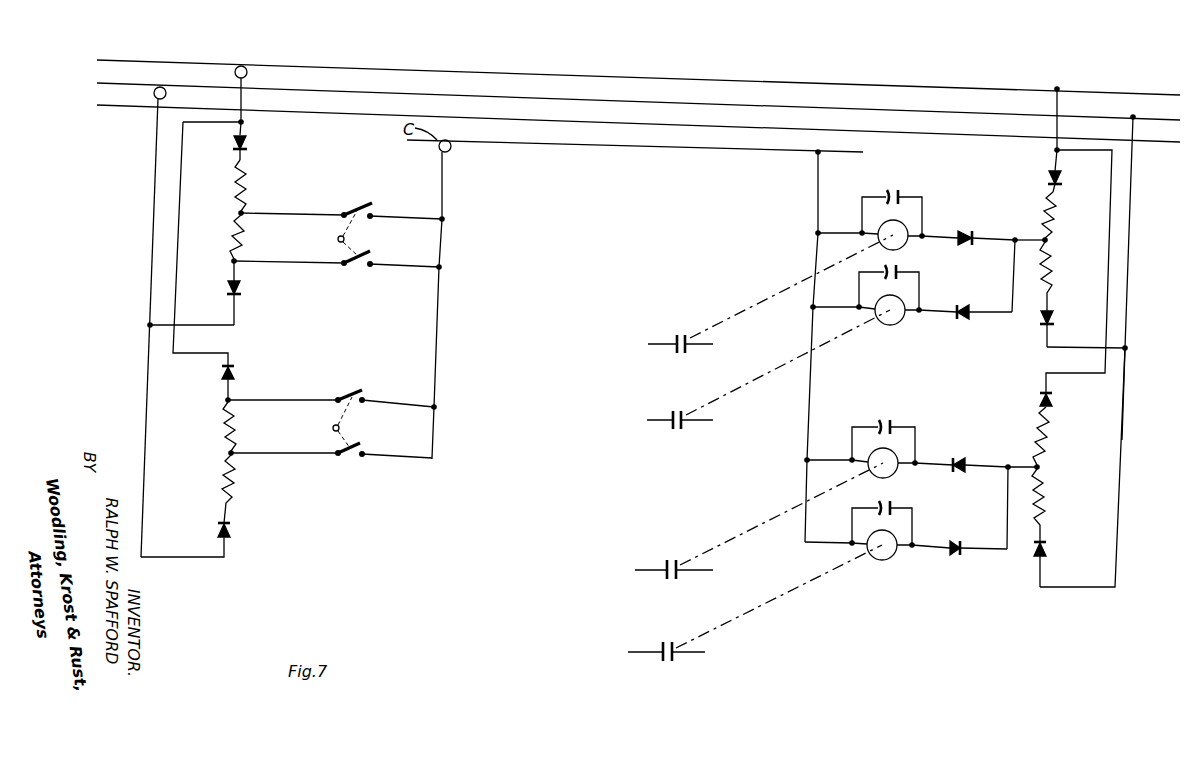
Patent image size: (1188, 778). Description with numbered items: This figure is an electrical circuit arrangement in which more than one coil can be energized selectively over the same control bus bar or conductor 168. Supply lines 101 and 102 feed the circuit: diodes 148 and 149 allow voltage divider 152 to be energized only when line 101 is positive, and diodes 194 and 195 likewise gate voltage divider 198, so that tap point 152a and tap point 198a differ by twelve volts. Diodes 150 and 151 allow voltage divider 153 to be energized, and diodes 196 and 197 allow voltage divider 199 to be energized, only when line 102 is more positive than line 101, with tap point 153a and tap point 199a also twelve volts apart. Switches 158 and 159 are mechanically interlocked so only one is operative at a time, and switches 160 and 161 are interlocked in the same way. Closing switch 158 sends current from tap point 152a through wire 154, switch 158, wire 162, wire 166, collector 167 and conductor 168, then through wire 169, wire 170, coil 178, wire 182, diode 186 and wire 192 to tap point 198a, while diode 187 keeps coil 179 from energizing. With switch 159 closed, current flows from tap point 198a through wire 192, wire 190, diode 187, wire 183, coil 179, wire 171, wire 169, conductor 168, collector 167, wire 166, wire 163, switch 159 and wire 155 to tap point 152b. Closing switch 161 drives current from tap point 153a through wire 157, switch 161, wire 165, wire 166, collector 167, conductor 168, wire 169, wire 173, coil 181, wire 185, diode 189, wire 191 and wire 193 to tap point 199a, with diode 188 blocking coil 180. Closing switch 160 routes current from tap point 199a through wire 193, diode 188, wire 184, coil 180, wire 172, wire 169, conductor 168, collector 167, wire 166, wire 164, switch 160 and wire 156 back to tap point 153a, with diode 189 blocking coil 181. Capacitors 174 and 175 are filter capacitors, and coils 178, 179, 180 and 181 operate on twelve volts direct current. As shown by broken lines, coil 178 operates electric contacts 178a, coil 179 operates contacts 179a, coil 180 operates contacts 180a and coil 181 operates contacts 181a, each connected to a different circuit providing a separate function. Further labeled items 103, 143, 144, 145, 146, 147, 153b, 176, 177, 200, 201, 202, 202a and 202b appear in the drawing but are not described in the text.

The line 101 is at (131, 60).
The line 102 is at (104, 82).
The supply conductor 103 is at (100, 106).
The terminal 143 is at (247, 66).
The terminal 144 is at (155, 100).
The conductor 145 is at (243, 100).
The conductor 146 is at (180, 210).
The conductor 147 is at (240, 325).
The diode 148 is at (250, 142).
The diode 149 is at (245, 288).
The diode 150 is at (238, 370).
The diode 151 is at (235, 530).
The voltage divider 152 is at (248, 175).
The tap point 152a is at (243, 212).
The tap point 152b is at (234, 261).
The voltage divider 153 is at (233, 490).
The tap point 153a is at (230, 453).
The resistor tap 153b is at (235, 403).
The wire 154 is at (338, 211).
The wire 155 is at (295, 258).
The wire 156 is at (305, 398).
The wire 157 is at (268, 453).
The switch 158 is at (373, 203).
The switch 159 is at (375, 252).
The switch 160 is at (365, 392).
The switch 161 is at (353, 457).
The wire 162 is at (445, 219).
The wire 163 is at (404, 270).
The wire 164 is at (437, 402).
The wire 165 is at (420, 460).
The wire 166 is at (437, 315).
The collector 167 is at (452, 150).
The control bus bar or conductor 168 is at (496, 140).
The wire 169 is at (806, 430).
The wire 170 is at (832, 230).
The wire 171 is at (848, 302).
The wire 172 is at (822, 456).
The wire 173 is at (840, 540).
The filter capacitor 174 is at (897, 200).
The filter capacitor 175 is at (923, 290).
The capacitor 176 is at (893, 428).
The capacitor 177 is at (893, 508).
The coil 178 is at (905, 245).
The coil 179 is at (885, 325).
The coil 180 is at (895, 472).
The coil 181 is at (883, 562).
The electric contacts 178a is at (675, 338).
The electric contacts 179a is at (671, 414).
The electric contacts 180a is at (665, 565).
The electric contacts 181a is at (661, 647).
The wire 182 is at (925, 215).
The wire 183 is at (940, 312).
The wire 184 is at (938, 460).
The wire 185 is at (925, 545).
The diode 186 is at (965, 230).
The diode 187 is at (962, 318).
The diode 188 is at (960, 460).
The diode 189 is at (955, 555).
The wire 190 is at (1015, 300).
The wire 191 is at (985, 549).
The wire 192 is at (1030, 238).
The wire 193 is at (1025, 467).
The diode 194 is at (1050, 172).
The diode 195 is at (1050, 318).
The diode 196 is at (1043, 392).
The diode 197 is at (1038, 560).
The voltage divider 198 is at (1052, 195).
The tap point 198a is at (1048, 240).
The voltage divider 199 is at (1048, 497).
The tap point 199a is at (1045, 468).
The conductor 200 is at (1127, 252).
The conductor 201 is at (1133, 162).
The conductor 202 is at (1052, 128).
The conductor 202a is at (1050, 336).
The conductor 202b is at (1122, 320).